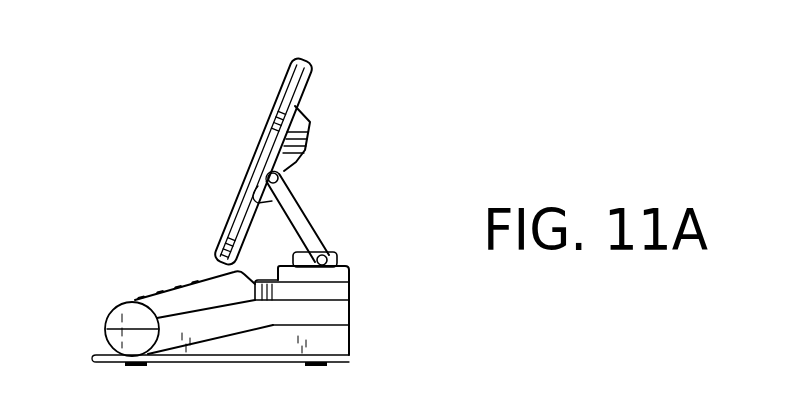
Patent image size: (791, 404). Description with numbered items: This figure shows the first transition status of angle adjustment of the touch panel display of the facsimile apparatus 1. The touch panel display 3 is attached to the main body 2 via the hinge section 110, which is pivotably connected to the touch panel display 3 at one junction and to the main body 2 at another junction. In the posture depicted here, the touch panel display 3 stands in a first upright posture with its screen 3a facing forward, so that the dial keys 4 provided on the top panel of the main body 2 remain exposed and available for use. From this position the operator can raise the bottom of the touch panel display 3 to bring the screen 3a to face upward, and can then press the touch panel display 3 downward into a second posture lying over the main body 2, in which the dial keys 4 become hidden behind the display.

The facsimile apparatus 1 is at (108, 115).
The main body 2 is at (338, 343).
The touch panel display 3 is at (300, 50).
The screen 3a is at (254, 153).
The dial keys 4 is at (157, 292).
The hinge section 110 is at (300, 208).